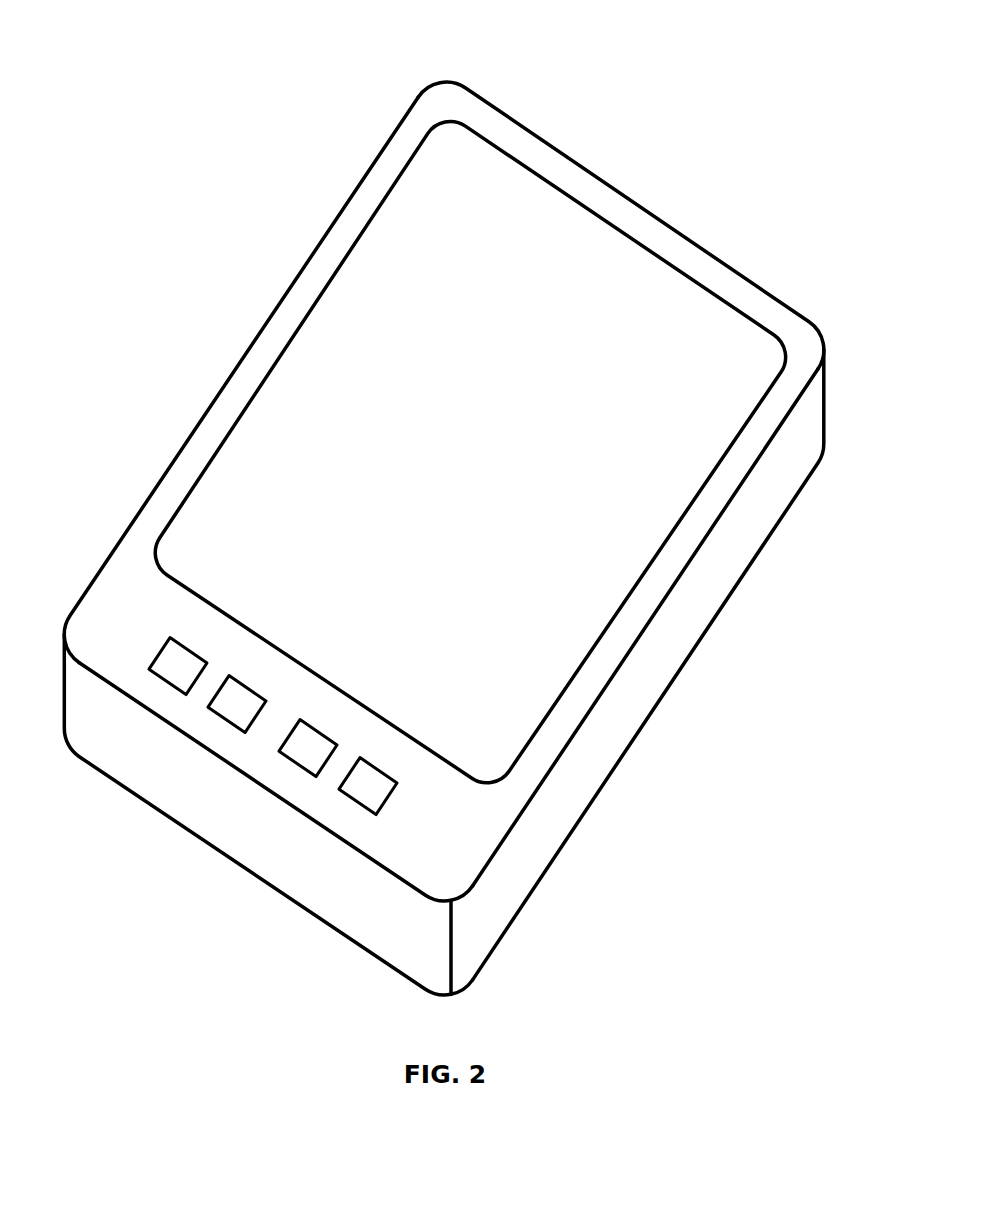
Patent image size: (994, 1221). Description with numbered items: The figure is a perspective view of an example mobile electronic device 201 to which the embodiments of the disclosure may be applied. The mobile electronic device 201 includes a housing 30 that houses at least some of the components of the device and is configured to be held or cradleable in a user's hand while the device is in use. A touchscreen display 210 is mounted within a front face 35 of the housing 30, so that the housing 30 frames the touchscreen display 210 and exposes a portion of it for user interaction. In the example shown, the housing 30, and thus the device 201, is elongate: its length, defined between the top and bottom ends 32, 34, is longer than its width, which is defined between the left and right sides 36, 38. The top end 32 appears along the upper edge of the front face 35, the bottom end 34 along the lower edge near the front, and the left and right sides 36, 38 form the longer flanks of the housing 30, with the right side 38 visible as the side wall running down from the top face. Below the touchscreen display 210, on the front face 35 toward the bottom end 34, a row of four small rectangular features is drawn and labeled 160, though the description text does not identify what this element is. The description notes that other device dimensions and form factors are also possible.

The mobile electronic device 201 is at (353, 41).
The housing 30 is at (671, 222).
The top end 32 is at (537, 130).
The bottom end 34 is at (320, 893).
The front face 35 is at (115, 585).
The left side 36 is at (228, 374).
The right side 38 is at (708, 623).
The touchscreen display 210 is at (317, 290).
The buttons 160 is at (141, 660).